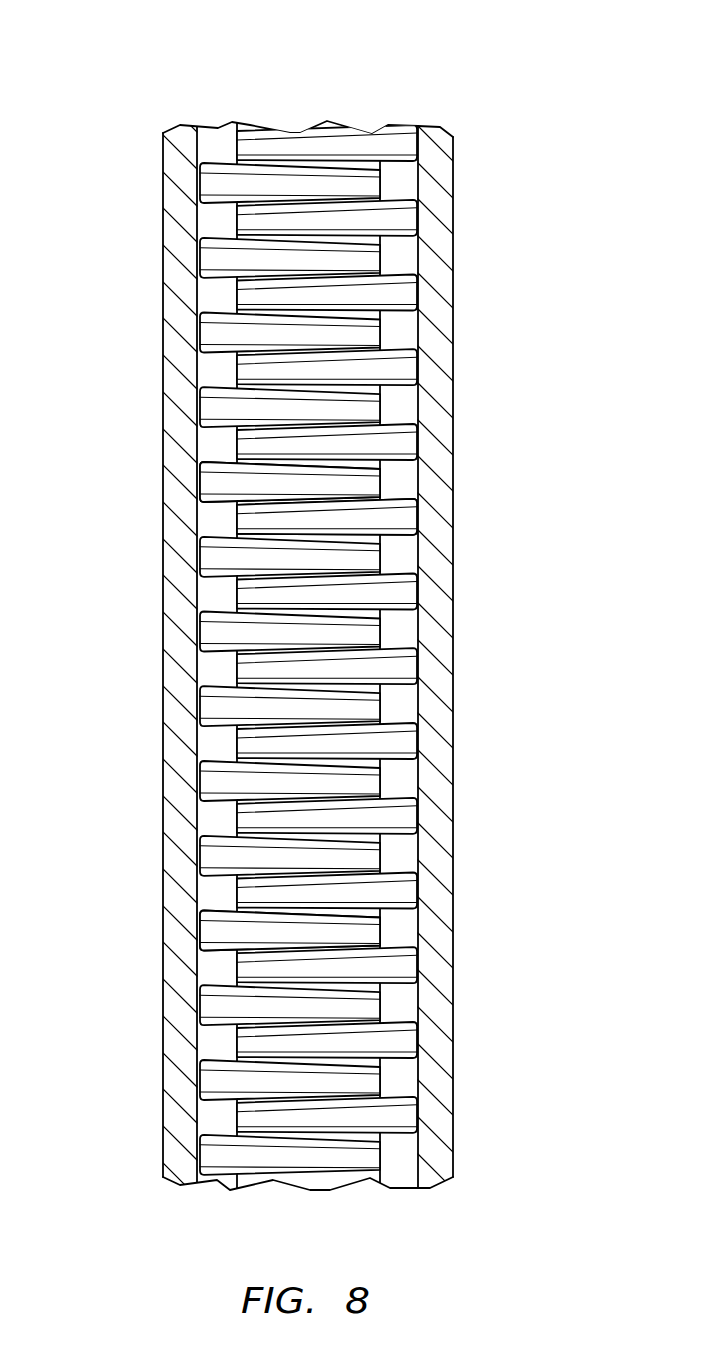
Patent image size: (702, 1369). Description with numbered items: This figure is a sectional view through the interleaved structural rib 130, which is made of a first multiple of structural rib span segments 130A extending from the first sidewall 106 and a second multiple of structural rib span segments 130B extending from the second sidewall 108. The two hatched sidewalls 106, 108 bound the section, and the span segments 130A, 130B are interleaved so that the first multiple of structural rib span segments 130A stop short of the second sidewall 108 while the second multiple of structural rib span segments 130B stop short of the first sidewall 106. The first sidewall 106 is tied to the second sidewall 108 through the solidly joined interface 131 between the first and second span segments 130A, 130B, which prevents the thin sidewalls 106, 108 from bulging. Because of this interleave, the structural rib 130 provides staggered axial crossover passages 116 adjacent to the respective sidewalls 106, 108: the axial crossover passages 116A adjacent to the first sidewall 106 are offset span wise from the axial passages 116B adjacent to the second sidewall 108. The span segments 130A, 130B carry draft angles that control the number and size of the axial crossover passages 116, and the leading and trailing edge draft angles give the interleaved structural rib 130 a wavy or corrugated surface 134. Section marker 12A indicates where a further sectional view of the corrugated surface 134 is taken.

The first sidewall 106 is at (173, 340).
The second sidewall 108 is at (443, 330).
The axial crossover passages 116 is at (302, 1214).
The axial crossover passages adjacent to the first sidewall 116A is at (223, 591).
The axial passages adjacent to the second sidewall 116B is at (395, 842).
The interleaved structural rib 130 is at (305, 596).
The first multiple of structural rib span segments 130A is at (213, 183).
The second multiple of structural rib span segments 130B is at (402, 150).
The solidly joined interface 131 is at (302, 500).
The wavy or corrugated surface 134 is at (217, 930).
The section line 12A is at (140, 662).